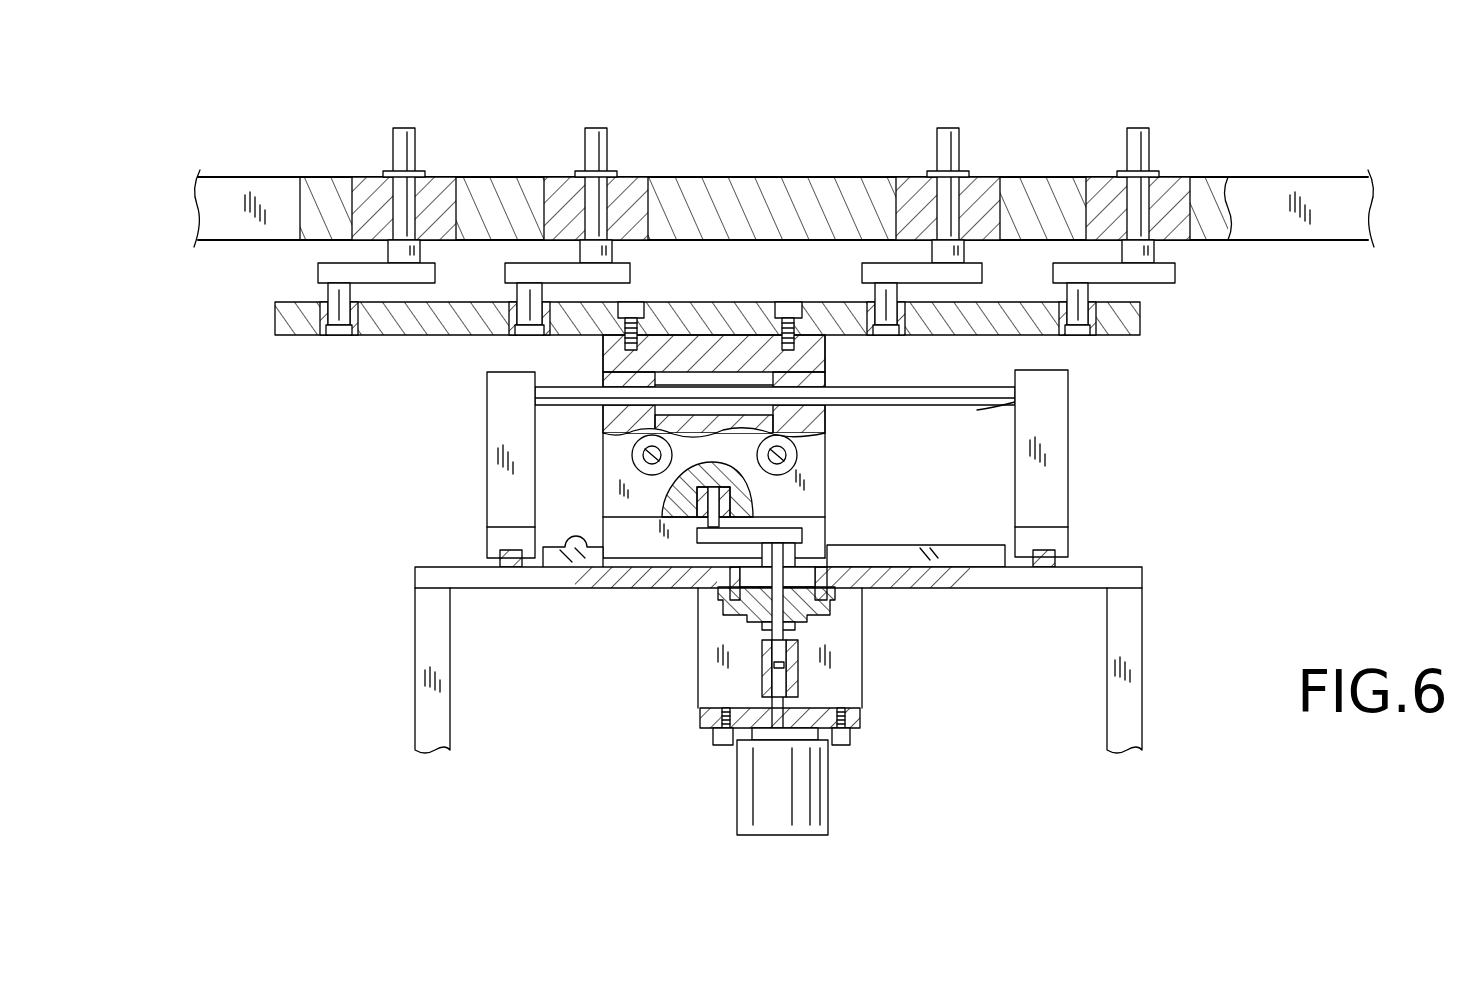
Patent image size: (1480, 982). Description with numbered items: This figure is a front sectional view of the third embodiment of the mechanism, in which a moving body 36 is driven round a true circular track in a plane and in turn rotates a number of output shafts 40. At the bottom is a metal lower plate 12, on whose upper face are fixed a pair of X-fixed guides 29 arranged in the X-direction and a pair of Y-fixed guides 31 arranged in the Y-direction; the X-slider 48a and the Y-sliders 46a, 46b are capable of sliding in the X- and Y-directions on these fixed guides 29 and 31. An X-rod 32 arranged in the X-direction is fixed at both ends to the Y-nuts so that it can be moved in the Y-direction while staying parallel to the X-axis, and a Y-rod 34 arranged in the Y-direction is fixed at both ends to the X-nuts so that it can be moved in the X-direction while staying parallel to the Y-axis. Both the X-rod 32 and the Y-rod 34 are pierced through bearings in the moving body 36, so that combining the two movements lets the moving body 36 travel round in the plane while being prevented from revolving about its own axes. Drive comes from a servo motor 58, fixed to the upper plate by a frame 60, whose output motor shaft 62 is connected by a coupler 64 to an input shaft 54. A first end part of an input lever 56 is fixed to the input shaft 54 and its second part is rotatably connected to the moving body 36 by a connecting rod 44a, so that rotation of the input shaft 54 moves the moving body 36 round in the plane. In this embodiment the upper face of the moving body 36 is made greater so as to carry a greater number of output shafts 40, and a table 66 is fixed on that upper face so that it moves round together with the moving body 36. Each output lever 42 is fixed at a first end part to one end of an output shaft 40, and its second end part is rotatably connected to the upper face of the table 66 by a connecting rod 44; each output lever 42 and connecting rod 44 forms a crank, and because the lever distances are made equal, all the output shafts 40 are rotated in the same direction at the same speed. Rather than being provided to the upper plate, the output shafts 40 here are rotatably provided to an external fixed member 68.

The lower plate 12 is at (1135, 578).
The X-fixed guides 29 is at (560, 548).
The Y-fixed guides 31 is at (503, 547).
The X-rod 32 is at (1015, 402).
The Y-rod 34 is at (632, 455).
The moving body 36 is at (590, 433).
The output shafts 40 is at (390, 148).
The output levers 42 is at (525, 268).
The connecting rods 44 is at (340, 338).
The connecting rod 44a is at (705, 522).
The Y-slider 46a is at (1050, 491).
The Y-slider 46b is at (502, 498).
The X-slider 48a is at (878, 543).
The input shaft 54 is at (770, 653).
The input lever 56 is at (752, 528).
The servo motor 58 is at (803, 810).
The frame 60 is at (862, 700).
The output motor shaft 62 is at (722, 712).
The coupler 64 is at (798, 657).
The table 66 is at (272, 320).
The external fixed member 68 is at (1352, 208).